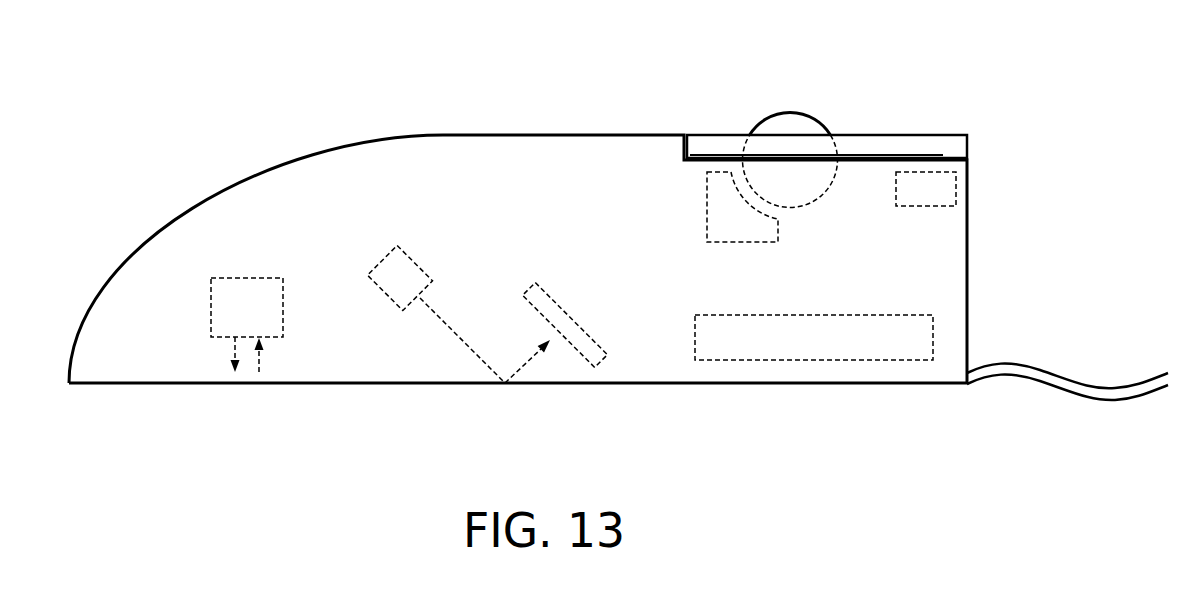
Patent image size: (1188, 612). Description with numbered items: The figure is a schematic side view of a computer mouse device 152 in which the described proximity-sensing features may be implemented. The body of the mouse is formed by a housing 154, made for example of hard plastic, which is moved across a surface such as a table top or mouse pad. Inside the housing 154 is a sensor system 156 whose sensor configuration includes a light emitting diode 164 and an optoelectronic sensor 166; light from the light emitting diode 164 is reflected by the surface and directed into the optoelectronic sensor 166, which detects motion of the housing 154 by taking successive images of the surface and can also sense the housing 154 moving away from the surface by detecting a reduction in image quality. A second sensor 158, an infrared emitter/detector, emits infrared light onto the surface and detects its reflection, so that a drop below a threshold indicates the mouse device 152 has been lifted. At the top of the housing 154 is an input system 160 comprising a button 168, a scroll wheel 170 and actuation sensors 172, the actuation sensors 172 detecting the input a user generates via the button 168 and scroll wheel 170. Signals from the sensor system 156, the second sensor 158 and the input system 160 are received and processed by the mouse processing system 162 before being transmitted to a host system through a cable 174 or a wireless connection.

The mouse device 152 is at (578, 86).
The housing 154 is at (332, 147).
The sensor system 156 is at (469, 240).
The second sensor 158 is at (211, 312).
The input system 160 is at (910, 109).
The mouse processing system 162 is at (825, 360).
The light emitting diode 164 is at (383, 295).
The optoelectronic sensor 166 is at (583, 358).
The button 168 is at (968, 140).
The scroll wheel 170 is at (783, 112).
The actuation sensors 172 is at (778, 242).
The cable 174 is at (1050, 385).